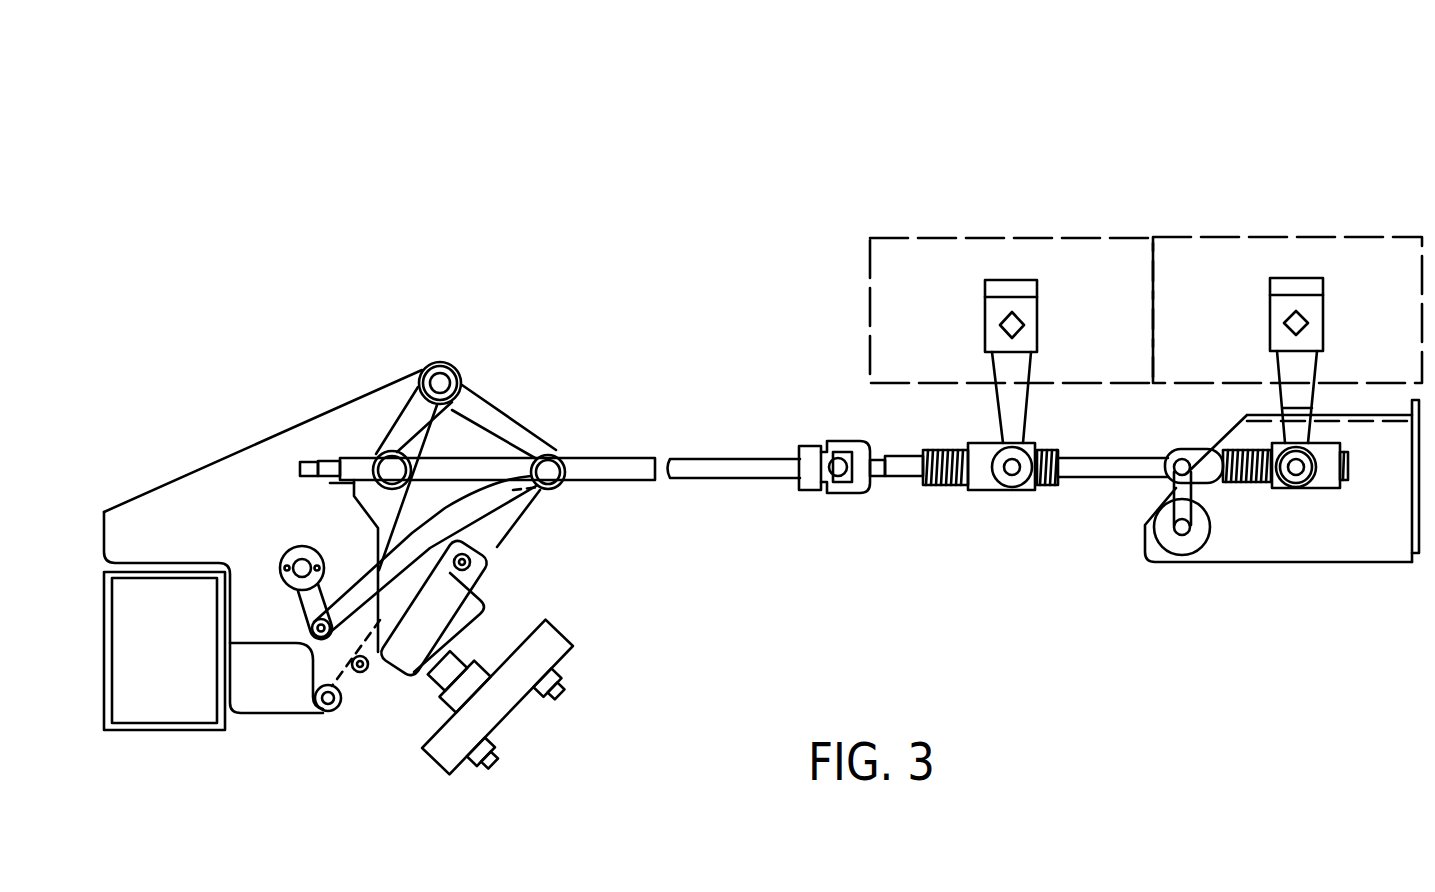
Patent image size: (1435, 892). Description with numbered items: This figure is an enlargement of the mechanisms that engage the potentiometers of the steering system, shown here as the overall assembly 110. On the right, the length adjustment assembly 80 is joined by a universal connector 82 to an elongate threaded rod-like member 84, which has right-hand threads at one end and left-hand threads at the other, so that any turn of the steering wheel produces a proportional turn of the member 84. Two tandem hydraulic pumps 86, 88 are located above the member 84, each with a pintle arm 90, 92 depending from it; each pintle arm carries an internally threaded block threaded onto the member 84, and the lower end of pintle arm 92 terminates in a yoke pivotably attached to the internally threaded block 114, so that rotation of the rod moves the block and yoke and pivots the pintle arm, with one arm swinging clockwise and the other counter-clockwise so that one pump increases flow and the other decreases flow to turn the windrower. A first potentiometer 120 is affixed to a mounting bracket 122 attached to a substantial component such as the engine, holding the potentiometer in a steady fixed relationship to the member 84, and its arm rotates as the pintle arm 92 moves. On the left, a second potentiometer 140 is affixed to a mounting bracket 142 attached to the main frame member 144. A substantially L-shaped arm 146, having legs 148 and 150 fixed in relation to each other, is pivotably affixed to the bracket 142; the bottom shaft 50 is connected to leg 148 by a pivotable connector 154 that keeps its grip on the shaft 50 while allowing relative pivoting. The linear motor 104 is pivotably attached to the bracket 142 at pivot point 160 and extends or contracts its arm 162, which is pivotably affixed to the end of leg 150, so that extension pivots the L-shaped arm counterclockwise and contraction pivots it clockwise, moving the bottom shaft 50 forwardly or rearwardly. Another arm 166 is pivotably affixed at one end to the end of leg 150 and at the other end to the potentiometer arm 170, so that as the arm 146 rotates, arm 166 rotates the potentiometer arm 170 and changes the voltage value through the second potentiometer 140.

The bottom shaft 50 is at (612, 476).
The length adjustment assembly 80 is at (715, 468).
The universal connector 82 is at (858, 492).
The elongate threaded rod-like member 84 is at (1050, 488).
The hydraulic pump 86 is at (950, 247).
The hydraulic pump 88 is at (1255, 247).
The pintle arm 90 is at (1023, 373).
The pintle arm 92 is at (1305, 370).
The linear motor 104 is at (548, 648).
The steering linkage assembly 110 is at (472, 296).
The internally threaded block 114 is at (1328, 472).
The first potentiometer 120 is at (1192, 545).
The mounting bracket 122 is at (1282, 540).
The second potentiometer 140 is at (330, 512).
The mounting bracket 142 is at (207, 475).
The main frame member 144 is at (165, 718).
The L-shaped arm 146 is at (508, 385).
The leg 148 is at (418, 410).
The leg 150 is at (500, 423).
The pivotable connector 154 is at (380, 428).
The pivot point 160 is at (340, 718).
The arm 162 is at (513, 505).
The arm 166 is at (500, 508).
The potentiometer arm 170 is at (312, 600).